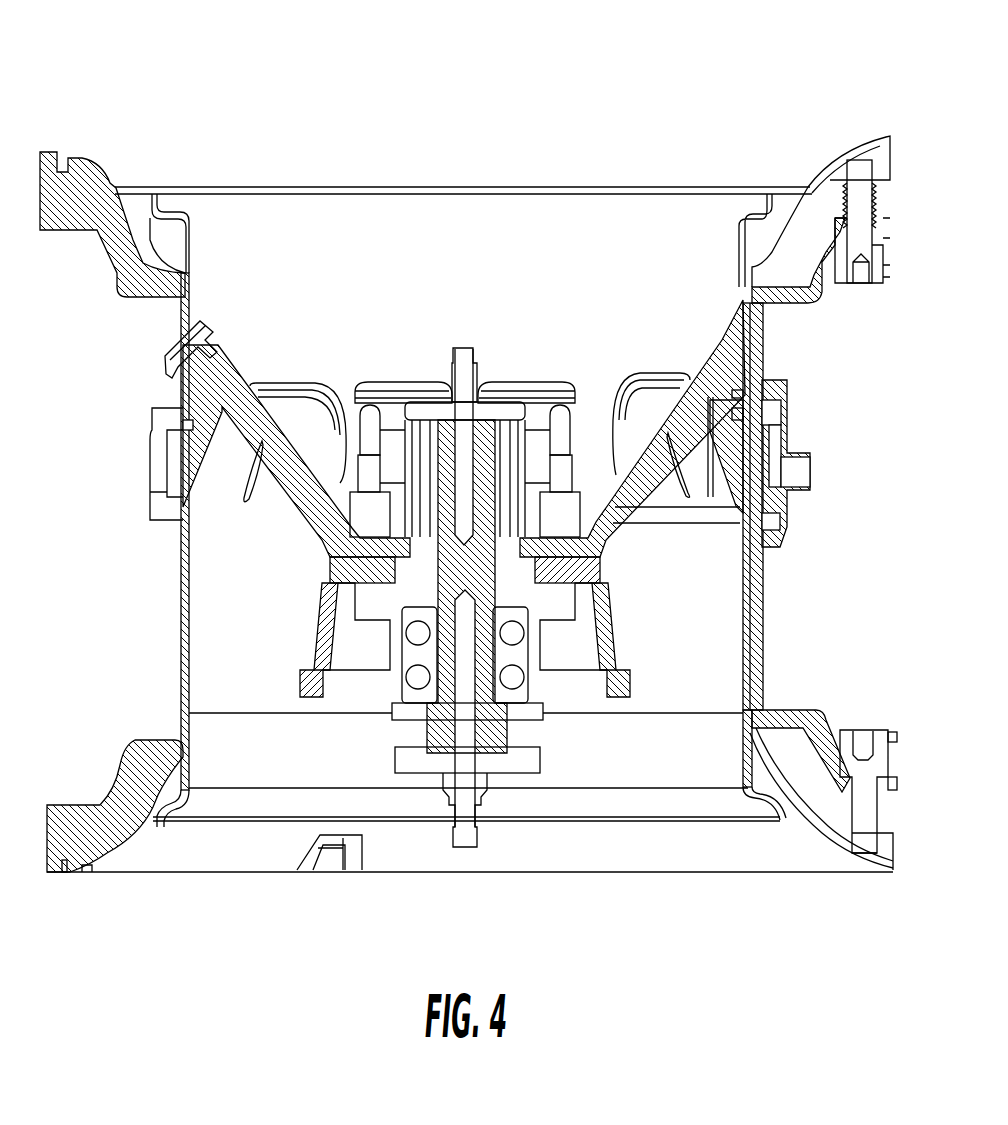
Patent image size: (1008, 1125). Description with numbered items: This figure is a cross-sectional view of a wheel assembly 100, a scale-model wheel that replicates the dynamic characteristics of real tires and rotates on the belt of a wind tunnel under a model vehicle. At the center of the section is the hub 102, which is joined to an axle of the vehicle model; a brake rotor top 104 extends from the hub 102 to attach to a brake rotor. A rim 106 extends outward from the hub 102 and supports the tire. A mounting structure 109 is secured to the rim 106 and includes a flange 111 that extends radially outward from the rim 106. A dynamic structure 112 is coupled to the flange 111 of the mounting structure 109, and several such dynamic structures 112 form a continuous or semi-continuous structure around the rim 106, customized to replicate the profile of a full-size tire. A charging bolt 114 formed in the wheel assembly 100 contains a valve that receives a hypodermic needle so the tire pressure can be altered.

The wheel assembly 100 is at (745, 84).
The hub 102 is at (498, 403).
The brake rotor top 104 is at (610, 635).
The rim 106 is at (733, 280).
The mounting structure 109 is at (763, 632).
The flange 111 is at (823, 724).
The dynamic structure 112 is at (477, 188).
The charging bolt 114 is at (208, 320).